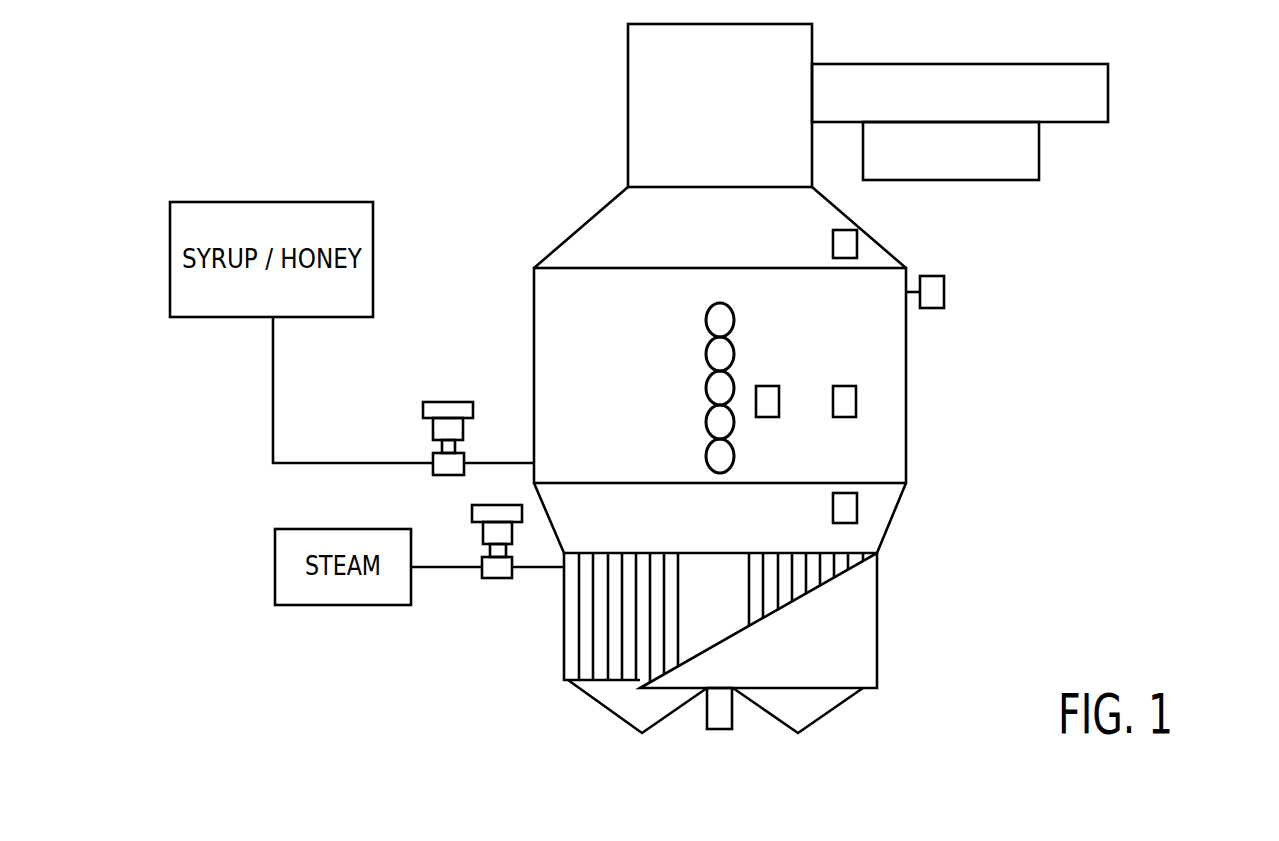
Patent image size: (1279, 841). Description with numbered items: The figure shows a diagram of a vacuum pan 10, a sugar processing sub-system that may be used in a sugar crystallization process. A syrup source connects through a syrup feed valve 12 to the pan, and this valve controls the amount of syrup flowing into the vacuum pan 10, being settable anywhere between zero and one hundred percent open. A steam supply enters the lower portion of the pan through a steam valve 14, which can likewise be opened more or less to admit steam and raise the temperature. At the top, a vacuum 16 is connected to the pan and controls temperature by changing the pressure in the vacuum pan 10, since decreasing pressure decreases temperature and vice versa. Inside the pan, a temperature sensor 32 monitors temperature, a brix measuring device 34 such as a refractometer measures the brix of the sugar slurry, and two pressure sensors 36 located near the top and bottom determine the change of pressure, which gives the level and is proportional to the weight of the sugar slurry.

The vacuum pan 10 is at (1152, 238).
The syrup feed valve 12 is at (450, 402).
The steam valve 14 is at (497, 578).
The vacuum 16 is at (958, 64).
The temperature sensor 32 is at (839, 386).
The brix measuring device 34 is at (762, 386).
The pressure sensors 36 is at (857, 243).